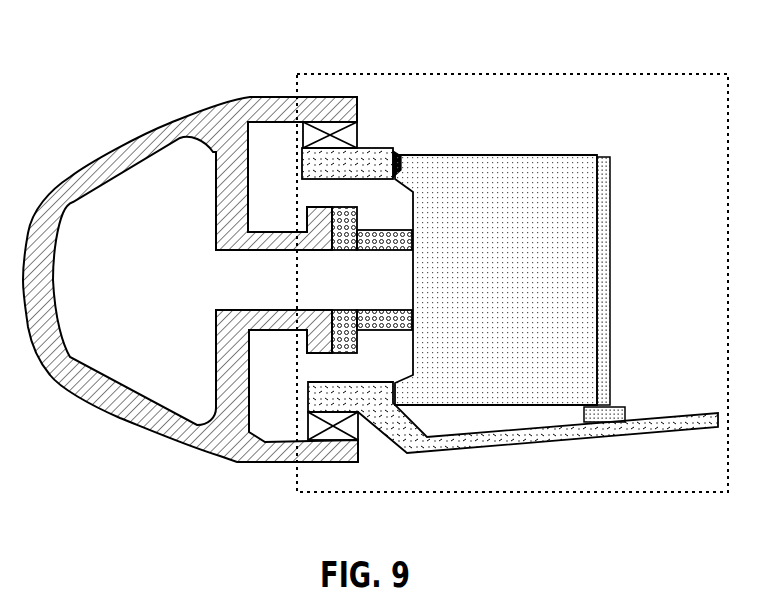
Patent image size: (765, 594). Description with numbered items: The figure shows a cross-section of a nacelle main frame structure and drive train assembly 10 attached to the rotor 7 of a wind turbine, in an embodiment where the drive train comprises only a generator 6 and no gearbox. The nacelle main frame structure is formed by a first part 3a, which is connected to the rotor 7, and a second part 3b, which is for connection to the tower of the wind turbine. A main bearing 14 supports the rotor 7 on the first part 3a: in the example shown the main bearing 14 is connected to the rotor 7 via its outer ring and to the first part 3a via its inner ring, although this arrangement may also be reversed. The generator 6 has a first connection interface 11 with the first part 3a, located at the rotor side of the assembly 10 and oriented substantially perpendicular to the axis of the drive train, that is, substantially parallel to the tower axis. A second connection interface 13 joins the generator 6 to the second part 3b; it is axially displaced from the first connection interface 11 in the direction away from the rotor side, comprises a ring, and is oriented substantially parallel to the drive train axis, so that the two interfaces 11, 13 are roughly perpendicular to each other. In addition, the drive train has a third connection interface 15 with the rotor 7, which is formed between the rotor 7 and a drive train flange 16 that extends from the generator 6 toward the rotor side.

The nacelle main frame structure and drive train assembly 10 is at (549, 72).
The rotor 7 is at (115, 168).
The main bearing 14 is at (328, 128).
The first part 3a is at (362, 167).
The second part 3b is at (475, 444).
The first connection interface 11 is at (399, 157).
The generator 6 is at (507, 183).
The third connection interface 15 is at (334, 238).
The drive train flange 16 is at (373, 238).
The second connection interface 13 is at (614, 427).